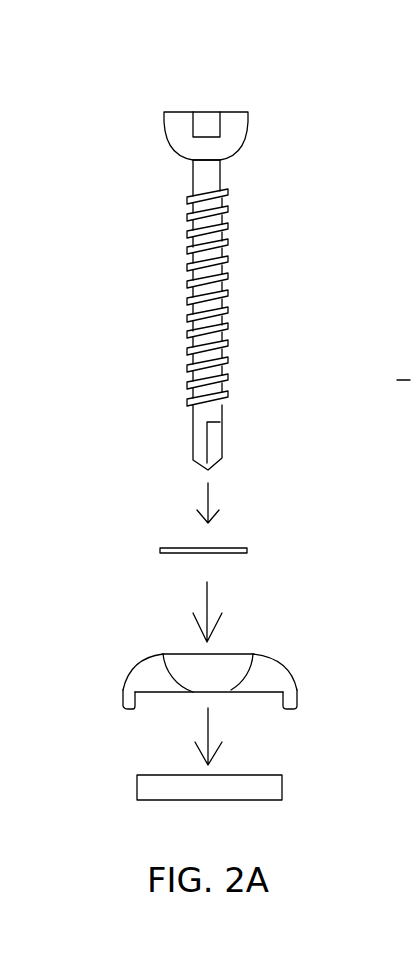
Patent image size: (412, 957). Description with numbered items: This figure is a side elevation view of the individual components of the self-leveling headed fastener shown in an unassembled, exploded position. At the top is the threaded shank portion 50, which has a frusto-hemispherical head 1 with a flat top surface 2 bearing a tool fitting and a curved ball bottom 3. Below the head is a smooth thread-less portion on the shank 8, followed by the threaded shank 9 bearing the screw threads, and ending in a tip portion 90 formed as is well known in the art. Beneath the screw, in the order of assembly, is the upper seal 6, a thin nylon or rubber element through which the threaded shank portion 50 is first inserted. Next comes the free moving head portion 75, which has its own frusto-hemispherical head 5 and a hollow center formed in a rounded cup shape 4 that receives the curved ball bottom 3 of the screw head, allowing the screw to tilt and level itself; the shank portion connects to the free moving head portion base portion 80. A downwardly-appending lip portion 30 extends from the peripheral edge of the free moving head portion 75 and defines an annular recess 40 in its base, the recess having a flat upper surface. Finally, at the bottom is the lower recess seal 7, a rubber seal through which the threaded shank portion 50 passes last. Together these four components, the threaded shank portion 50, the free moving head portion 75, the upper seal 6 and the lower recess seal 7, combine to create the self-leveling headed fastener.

The frusto-hemispherical head 1 is at (191, 249).
The flat top surface 2 is at (207, 110).
The free moving head portion base portion 80 is at (229, 134).
The curved ball bottom 3 is at (243, 157).
The smooth thread-less portion on the shank 8 is at (200, 173).
The threaded shank 9 is at (182, 297).
The threaded shank portion 50 is at (222, 248).
The tip portion 90 is at (203, 441).
The upper seal 6 is at (255, 546).
The rounded cup shape 4 is at (214, 688).
The frusto-hemispherical head 5 is at (134, 672).
The free moving head portion 75 is at (268, 680).
The lip portion 30 is at (124, 698).
The annular recess 40 is at (163, 700).
The lower recess seal 7 is at (285, 788).